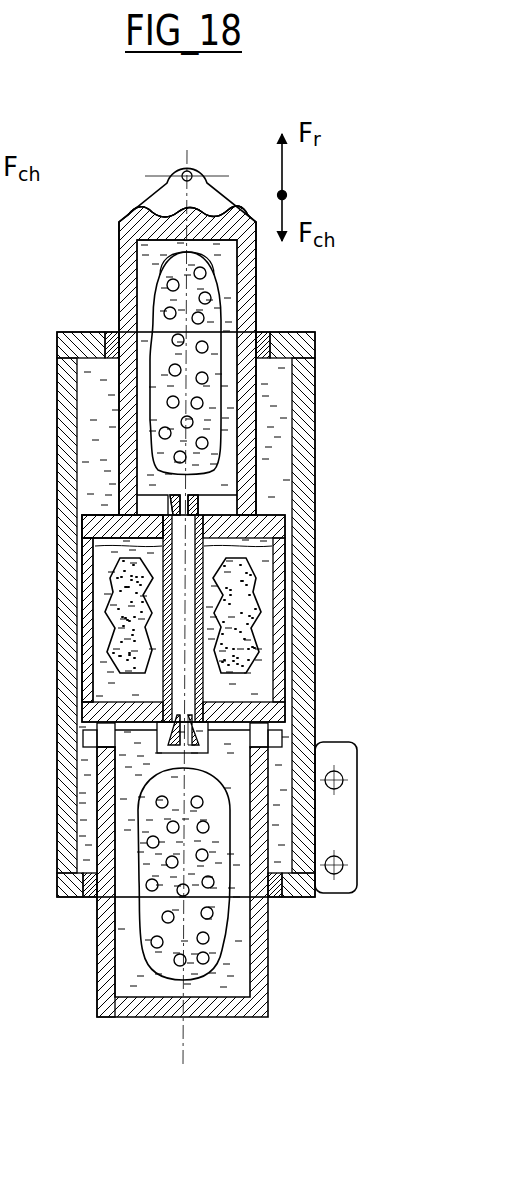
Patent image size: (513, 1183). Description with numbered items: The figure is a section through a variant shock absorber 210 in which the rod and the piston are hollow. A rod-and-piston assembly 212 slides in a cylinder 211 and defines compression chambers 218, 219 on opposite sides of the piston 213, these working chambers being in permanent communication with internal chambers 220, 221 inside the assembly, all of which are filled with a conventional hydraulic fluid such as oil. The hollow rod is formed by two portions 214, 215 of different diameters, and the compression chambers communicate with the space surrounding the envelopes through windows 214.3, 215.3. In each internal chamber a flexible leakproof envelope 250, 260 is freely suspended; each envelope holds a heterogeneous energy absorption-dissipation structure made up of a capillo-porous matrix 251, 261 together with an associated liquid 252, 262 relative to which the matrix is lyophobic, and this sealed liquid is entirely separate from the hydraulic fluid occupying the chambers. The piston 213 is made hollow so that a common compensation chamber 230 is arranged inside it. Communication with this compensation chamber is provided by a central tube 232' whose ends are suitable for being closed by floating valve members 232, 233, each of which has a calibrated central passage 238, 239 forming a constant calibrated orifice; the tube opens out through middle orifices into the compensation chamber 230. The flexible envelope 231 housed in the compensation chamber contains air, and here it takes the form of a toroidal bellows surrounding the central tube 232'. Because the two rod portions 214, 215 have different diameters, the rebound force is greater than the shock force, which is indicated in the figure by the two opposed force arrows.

The shock absorber 210 is at (120, 170).
The cylinder 211 is at (300, 422).
The rod-and-piston assembly 212 is at (112, 254).
The piston 213 is at (305, 548).
The hollow rod portion 214 is at (258, 284).
The window 214.3 is at (306, 517).
The hollow rod portion 215 is at (262, 960).
The window 215.3 is at (318, 752).
The compression chamber 218 is at (277, 388).
The compression chamber 219 is at (86, 797).
The internal chamber 220 is at (155, 247).
The internal chamber 221 is at (110, 910).
The compensation chamber 230 is at (262, 598).
The flexible envelope 231 is at (84, 598).
The floating valve member 232 is at (278, 473).
The central tube 232' is at (81, 522).
The floating valve member 233 is at (273, 745).
The calibrated central passage 238 is at (160, 497).
The calibrated central passage 239 is at (115, 723).
The flexible leakproof envelope 250 is at (158, 294).
The capillo-porous matrix 251 is at (206, 318).
The associated liquid 252 is at (218, 262).
The flexible leakproof envelope 260 is at (228, 905).
The capillo-porous matrix 261 is at (187, 966).
The associated liquid 262 is at (168, 968).